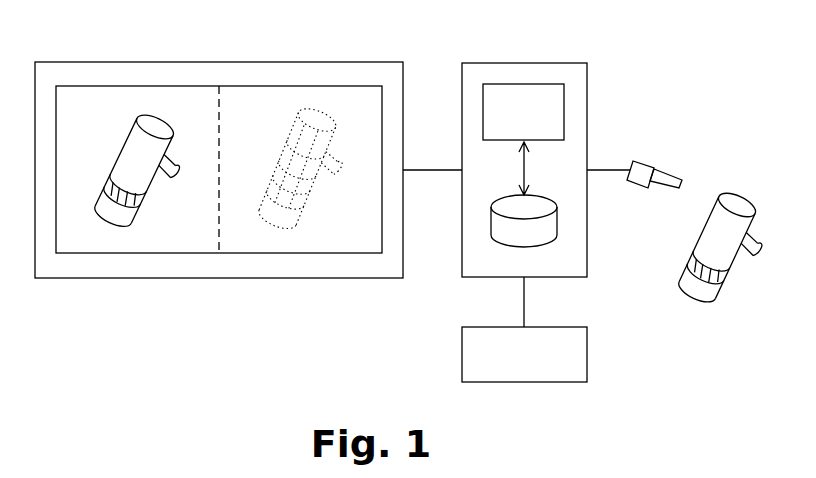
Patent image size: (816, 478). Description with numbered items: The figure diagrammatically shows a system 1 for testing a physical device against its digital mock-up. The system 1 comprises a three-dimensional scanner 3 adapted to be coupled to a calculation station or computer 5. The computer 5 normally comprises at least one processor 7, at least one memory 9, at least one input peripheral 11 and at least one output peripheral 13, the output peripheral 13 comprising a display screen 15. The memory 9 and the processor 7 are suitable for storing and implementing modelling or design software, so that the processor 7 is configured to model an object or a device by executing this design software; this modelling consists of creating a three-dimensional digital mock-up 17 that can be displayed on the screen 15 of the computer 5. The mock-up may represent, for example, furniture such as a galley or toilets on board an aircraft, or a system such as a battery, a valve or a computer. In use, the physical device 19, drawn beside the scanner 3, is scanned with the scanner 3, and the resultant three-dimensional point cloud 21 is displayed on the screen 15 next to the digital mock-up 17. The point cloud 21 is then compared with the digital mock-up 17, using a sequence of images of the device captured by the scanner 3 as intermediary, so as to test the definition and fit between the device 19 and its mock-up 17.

The system 1 is at (399, 333).
The three-dimensional scanner 3 is at (650, 172).
The calculation station or computer 5 is at (311, 315).
The processor 7 is at (558, 116).
The memory 9 is at (548, 225).
The input peripheral 11 is at (575, 357).
The output peripheral 13 is at (345, 62).
The display screen 15 is at (262, 86).
The digital mock-up 17 is at (113, 217).
The physical device 19 is at (713, 200).
The three-dimensional point cloud 21 is at (273, 220).